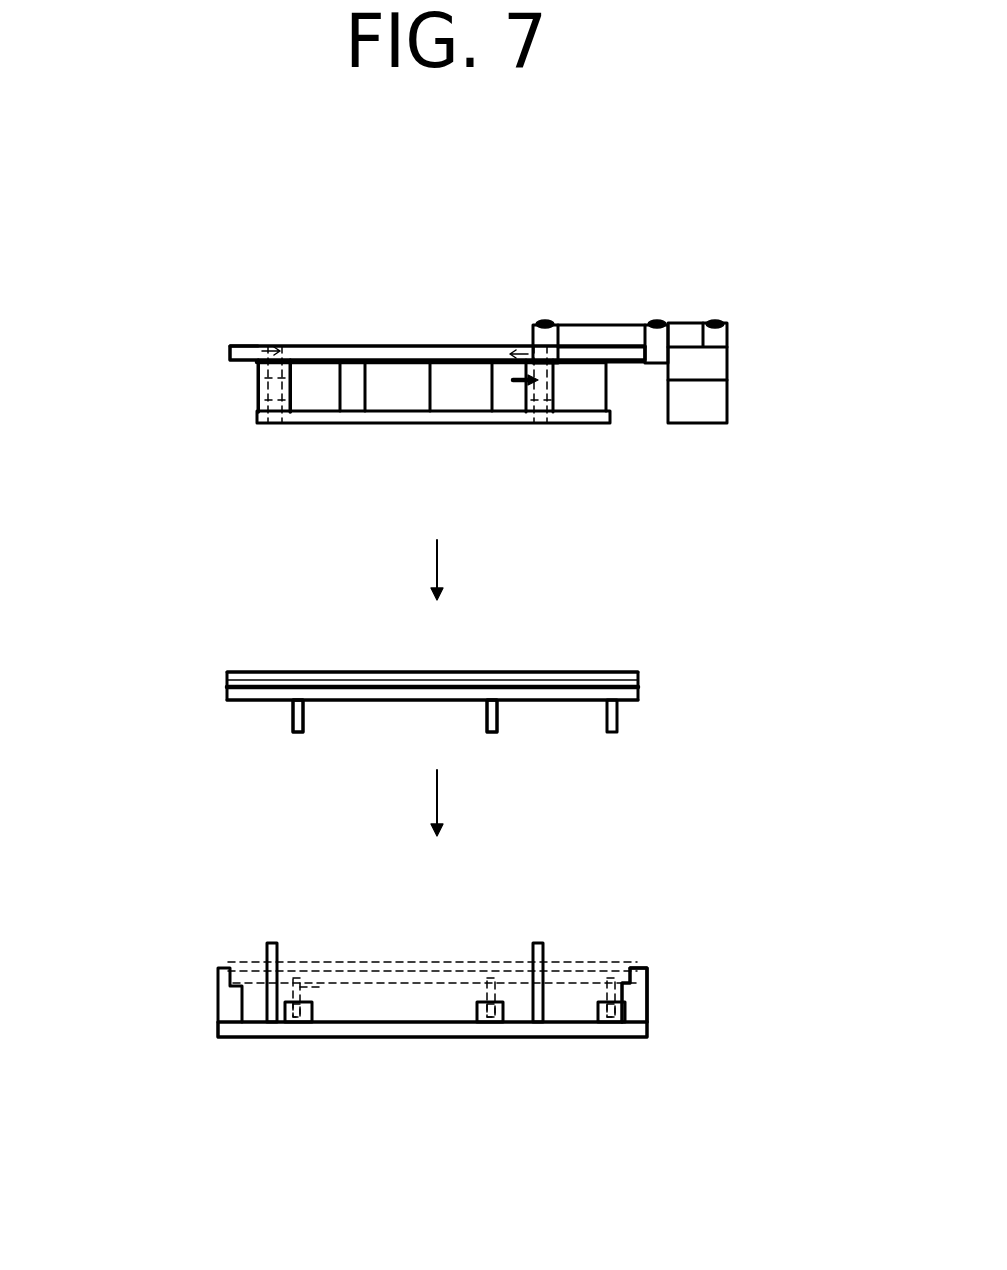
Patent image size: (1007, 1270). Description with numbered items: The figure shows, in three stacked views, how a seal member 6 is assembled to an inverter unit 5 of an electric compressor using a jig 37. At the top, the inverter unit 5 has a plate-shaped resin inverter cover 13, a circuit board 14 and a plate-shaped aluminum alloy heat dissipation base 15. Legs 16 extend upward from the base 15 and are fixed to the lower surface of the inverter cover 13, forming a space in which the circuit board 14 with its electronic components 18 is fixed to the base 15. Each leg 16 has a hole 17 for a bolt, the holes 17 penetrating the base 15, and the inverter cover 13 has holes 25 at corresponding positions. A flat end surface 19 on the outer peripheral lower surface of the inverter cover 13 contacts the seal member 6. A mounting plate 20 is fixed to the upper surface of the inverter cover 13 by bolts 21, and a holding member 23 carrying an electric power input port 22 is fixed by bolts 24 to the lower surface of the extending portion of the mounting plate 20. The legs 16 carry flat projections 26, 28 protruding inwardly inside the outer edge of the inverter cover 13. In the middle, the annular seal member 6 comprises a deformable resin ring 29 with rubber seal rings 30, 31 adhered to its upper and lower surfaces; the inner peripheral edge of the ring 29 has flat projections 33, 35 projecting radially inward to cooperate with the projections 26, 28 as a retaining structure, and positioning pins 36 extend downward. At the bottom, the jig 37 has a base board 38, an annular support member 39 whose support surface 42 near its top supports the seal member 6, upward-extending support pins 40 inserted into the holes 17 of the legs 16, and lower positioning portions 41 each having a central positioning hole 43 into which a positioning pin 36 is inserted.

The inverter unit 5 is at (333, 226).
The inverter cover 13 is at (380, 345).
The circuit board 14 is at (417, 345).
The heat dissipation base 15 is at (447, 424).
The legs 16 is at (312, 424).
The hole 17 is at (267, 428).
The electronic components 18 is at (405, 412).
The end surface 19 is at (244, 382).
The mounting plate 20 is at (603, 323).
The bolts 21 is at (545, 320).
The electric power input port 22 is at (728, 397).
The holding member 23 is at (717, 364).
The bolts 24 is at (715, 320).
The holes 25 is at (268, 344).
The projection 26 is at (250, 390).
The projection 28 is at (503, 424).
The seal member 6 is at (580, 666).
The ring 29 is at (638, 686).
The seal ring 30 is at (638, 672).
The seal ring 31 is at (638, 698).
The projection 33 is at (300, 671).
The projection 35 is at (488, 671).
The positioning pins 36 is at (305, 713).
The jig 37 is at (195, 993).
The base board 38 is at (392, 1038).
The support member 39 is at (648, 997).
The support pin 40 is at (232, 1000).
The positioning portion 41 is at (313, 1018).
The support surface 42 is at (627, 970).
The positioning hole 43 is at (478, 1003).